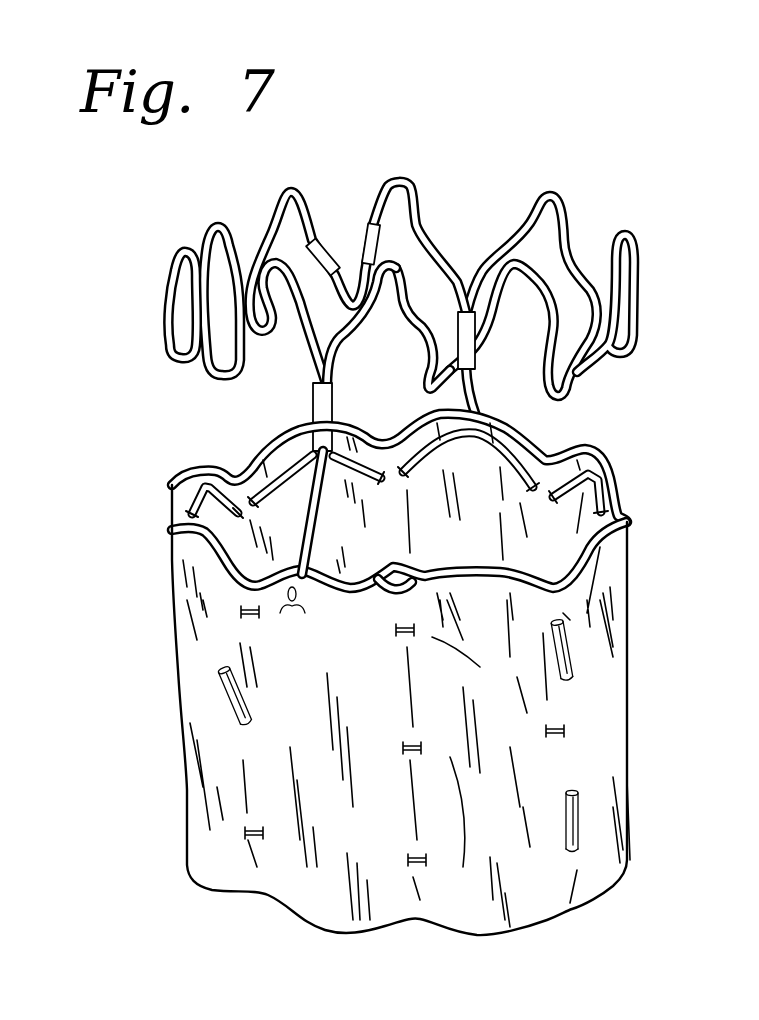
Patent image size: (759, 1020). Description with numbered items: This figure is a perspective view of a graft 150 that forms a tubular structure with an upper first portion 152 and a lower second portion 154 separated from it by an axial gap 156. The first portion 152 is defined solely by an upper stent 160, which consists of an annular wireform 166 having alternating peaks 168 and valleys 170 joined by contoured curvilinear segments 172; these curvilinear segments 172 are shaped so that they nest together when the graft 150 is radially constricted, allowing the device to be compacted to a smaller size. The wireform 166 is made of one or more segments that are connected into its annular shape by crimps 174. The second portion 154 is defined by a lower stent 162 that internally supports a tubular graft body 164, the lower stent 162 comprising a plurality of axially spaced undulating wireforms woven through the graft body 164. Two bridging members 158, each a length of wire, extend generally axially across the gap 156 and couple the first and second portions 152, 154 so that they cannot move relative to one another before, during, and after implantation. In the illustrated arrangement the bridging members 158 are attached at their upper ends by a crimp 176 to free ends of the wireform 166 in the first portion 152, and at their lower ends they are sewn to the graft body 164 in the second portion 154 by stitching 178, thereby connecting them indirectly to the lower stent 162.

The graft 150 is at (555, 140).
The first portion 152 is at (400, 260).
The second portion 154 is at (417, 679).
The gap 156 is at (429, 483).
The bridging members 158 is at (310, 501).
The stent 160 is at (167, 290).
The stent 162 is at (517, 449).
The tubular graft body 164 is at (232, 778).
The annular wireform 166 is at (419, 203).
The peaks 168 is at (388, 259).
The valleys 170 is at (416, 404).
The curvilinear segments 172 is at (428, 344).
The crimps 174 is at (366, 222).
The crimp 176 is at (312, 394).
The stitching 178 is at (287, 604).